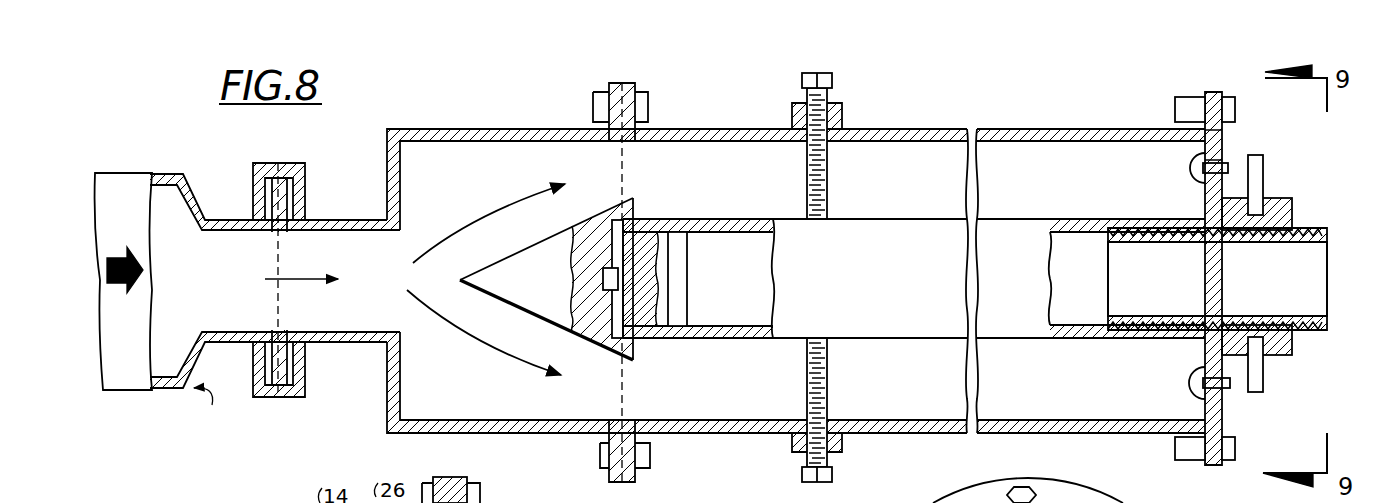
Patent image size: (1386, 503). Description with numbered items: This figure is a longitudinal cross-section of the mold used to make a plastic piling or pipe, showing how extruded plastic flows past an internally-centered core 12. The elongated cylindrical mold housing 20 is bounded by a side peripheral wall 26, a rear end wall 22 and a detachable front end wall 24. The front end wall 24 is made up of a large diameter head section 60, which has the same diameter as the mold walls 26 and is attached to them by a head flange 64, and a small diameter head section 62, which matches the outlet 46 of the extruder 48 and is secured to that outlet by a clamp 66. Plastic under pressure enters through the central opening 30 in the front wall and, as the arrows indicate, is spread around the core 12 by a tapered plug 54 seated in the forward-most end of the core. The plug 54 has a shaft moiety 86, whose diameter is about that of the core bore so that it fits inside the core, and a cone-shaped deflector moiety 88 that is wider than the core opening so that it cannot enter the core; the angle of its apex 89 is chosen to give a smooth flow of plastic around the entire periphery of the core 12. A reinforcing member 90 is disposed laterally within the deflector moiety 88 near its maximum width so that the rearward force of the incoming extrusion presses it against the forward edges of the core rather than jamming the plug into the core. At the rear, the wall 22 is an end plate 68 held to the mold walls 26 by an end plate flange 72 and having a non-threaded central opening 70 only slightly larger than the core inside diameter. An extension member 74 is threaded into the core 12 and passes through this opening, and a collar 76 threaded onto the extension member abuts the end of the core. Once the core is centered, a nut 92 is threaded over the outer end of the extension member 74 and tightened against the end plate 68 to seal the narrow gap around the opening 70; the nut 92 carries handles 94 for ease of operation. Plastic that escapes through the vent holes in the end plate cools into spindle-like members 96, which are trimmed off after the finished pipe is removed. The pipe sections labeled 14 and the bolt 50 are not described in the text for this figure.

The core 12 is at (732, 227).
The outer pipe section 14 is at (910, 152).
The mold housing 20 is at (716, 107).
The rear end wall 22 is at (1217, 143).
The front end wall 24 is at (533, 129).
The side peripheral wall 26 is at (1015, 128).
The central opening 30 is at (325, 242).
The outlet 46 is at (228, 240).
The extruder 48 is at (199, 405).
The bolt 50 is at (815, 113).
The plug 54 is at (556, 217).
The large diameter head section 60 is at (440, 129).
The small diameter head section 62 is at (361, 342).
The head flange 64 is at (620, 484).
The clamp 66 is at (293, 164).
The end plate 68 is at (1215, 425).
The central opening 70 is at (1262, 200).
The end plate flange 72 is at (1215, 88).
The extension member 74 is at (1322, 232).
The collar 76 is at (1193, 213).
The shaft moiety 86 is at (675, 242).
The deflector moiety 88 is at (511, 276).
The apex 89 is at (470, 274).
The reinforcing member 90 is at (634, 208).
The nut 92 is at (1282, 215).
The handles 94 is at (1258, 170).
The spindle-like members 96 is at (1231, 386).